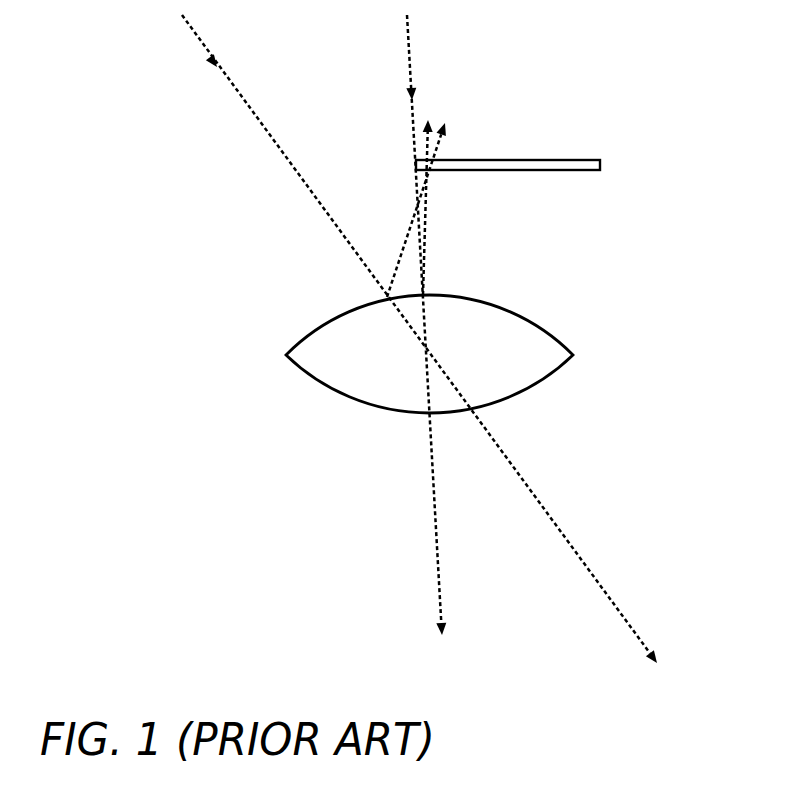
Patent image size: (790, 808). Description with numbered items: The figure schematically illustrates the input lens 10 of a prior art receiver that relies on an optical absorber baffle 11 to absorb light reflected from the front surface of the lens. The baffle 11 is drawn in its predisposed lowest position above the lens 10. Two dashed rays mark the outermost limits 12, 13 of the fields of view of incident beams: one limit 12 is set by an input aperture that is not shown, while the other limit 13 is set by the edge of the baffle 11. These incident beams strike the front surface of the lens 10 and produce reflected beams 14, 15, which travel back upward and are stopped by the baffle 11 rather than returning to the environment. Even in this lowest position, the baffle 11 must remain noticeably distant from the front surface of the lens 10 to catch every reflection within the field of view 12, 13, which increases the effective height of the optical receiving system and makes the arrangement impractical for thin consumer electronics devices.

The input lens 10 is at (560, 333).
The optical absorber baffle 11 is at (600, 162).
The outermost limit of the field of view 12 is at (307, 190).
The outermost limit of the field of view 13 is at (409, 48).
The reflected beam 14 is at (405, 234).
The reflected beam 15 is at (428, 212).